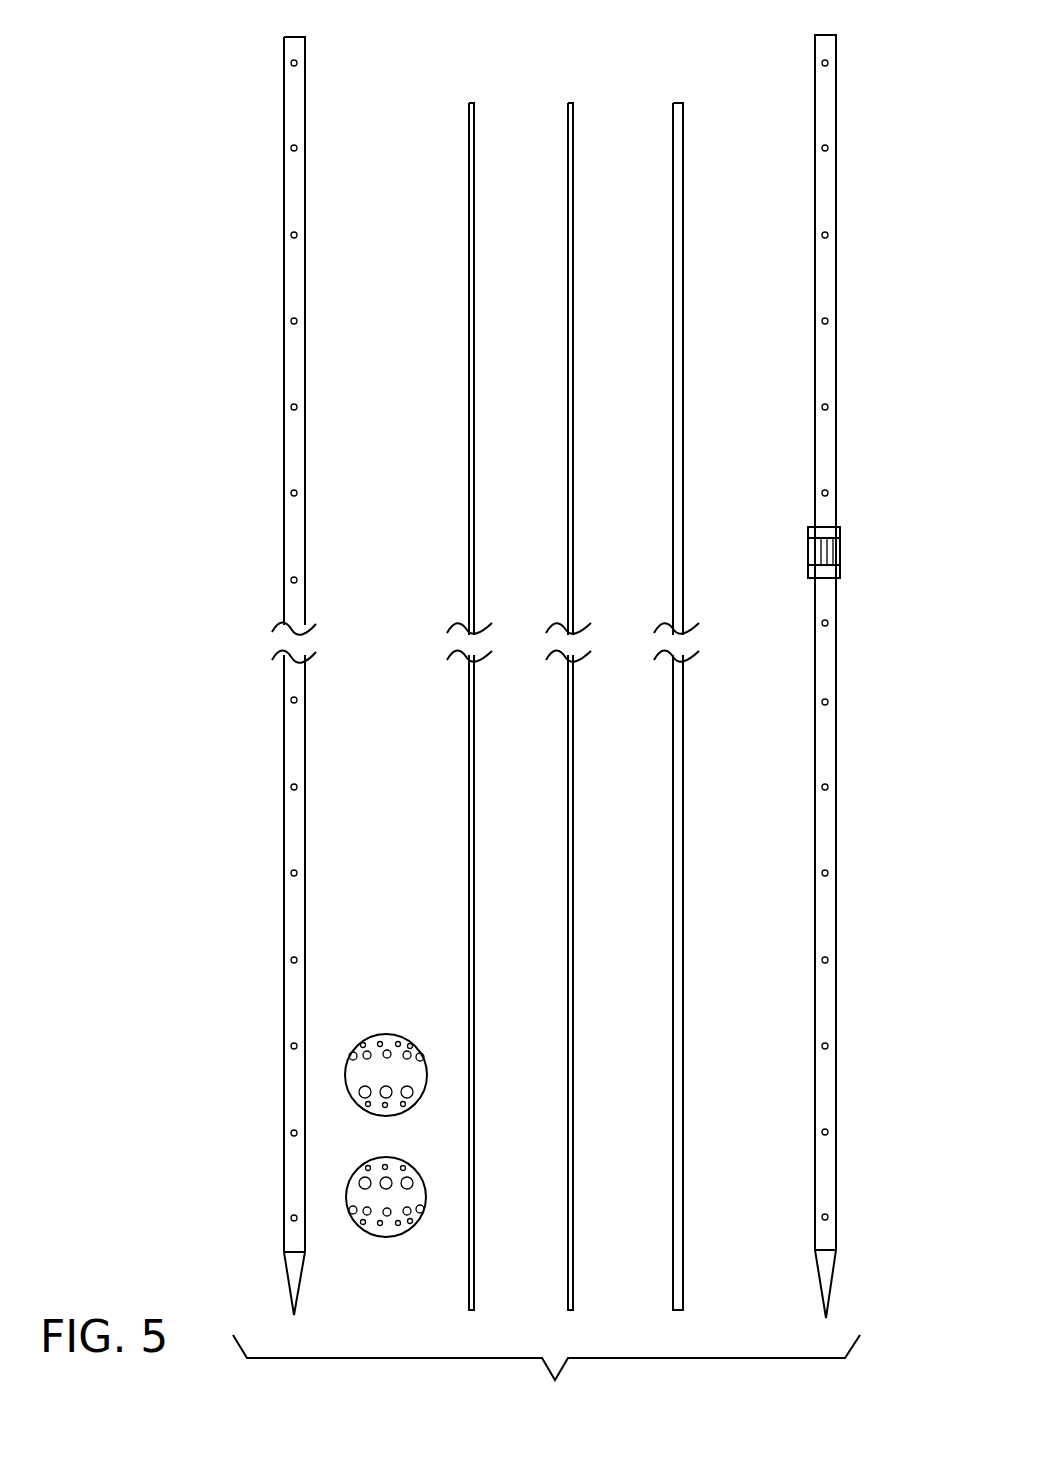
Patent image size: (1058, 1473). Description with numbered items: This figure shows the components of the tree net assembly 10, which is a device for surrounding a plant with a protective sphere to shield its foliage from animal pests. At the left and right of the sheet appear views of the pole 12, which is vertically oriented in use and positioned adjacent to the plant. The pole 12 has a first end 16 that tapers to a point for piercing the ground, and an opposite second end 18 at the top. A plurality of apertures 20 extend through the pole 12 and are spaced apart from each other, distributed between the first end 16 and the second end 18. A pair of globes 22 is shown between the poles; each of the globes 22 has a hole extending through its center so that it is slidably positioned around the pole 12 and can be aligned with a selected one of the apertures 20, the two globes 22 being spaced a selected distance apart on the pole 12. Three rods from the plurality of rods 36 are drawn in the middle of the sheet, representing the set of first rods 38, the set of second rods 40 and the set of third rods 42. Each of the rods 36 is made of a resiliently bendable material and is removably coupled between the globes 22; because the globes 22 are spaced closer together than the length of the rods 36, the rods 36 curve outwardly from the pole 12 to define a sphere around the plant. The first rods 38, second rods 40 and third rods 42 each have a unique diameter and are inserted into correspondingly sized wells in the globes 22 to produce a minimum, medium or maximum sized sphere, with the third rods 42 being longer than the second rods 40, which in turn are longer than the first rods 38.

The tree net assembly 10 is at (140, 162).
The pole 12 is at (284, 360).
The first end 16 is at (294, 1315).
The second end 18 is at (297, 40).
The apertures 20 is at (290, 408).
The globes 22 is at (418, 1168).
The rods 36 is at (678, 115).
The first rods 38 is at (474, 187).
The second rods 40 is at (570, 217).
The third rods 42 is at (680, 229).